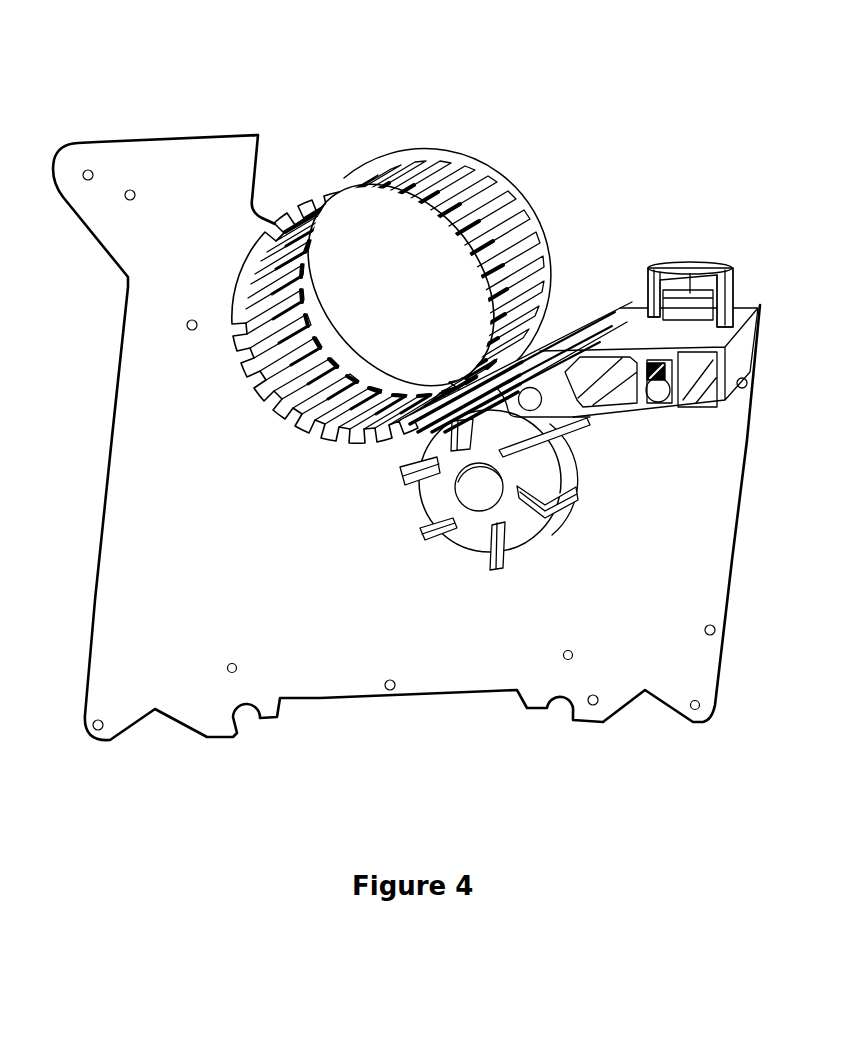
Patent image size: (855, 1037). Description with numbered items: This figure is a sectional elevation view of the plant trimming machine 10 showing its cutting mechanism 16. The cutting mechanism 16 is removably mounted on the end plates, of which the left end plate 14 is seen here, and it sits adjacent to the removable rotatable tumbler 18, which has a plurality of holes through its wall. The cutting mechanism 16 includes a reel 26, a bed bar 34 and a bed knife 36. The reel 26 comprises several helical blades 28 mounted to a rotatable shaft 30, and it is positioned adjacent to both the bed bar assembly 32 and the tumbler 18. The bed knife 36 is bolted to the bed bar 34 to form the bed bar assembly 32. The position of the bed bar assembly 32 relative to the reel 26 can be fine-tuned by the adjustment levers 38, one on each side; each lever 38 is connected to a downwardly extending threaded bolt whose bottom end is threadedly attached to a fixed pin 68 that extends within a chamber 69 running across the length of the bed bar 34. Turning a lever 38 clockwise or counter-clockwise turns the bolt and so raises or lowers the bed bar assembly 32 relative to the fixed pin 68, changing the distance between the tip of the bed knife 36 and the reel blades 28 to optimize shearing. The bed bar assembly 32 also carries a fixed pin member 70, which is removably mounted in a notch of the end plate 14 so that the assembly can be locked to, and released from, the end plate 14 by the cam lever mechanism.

The plant trimming machine 10 is at (203, 41).
The end plate 14 is at (128, 476).
The cutting mechanism 16 is at (407, 251).
The tumbler 18 is at (420, 150).
The reel 26 is at (467, 498).
The helical blades 28 is at (420, 540).
The rotatable shaft 30 is at (470, 498).
The bed bar assembly 32 is at (579, 358).
The bed bar 34 is at (642, 332).
The bed knife 36 is at (535, 352).
The adjustment lever 38 is at (700, 262).
The fixed pin 68 is at (655, 395).
The chamber 69 is at (662, 378).
The fixed pin member 70 is at (534, 403).